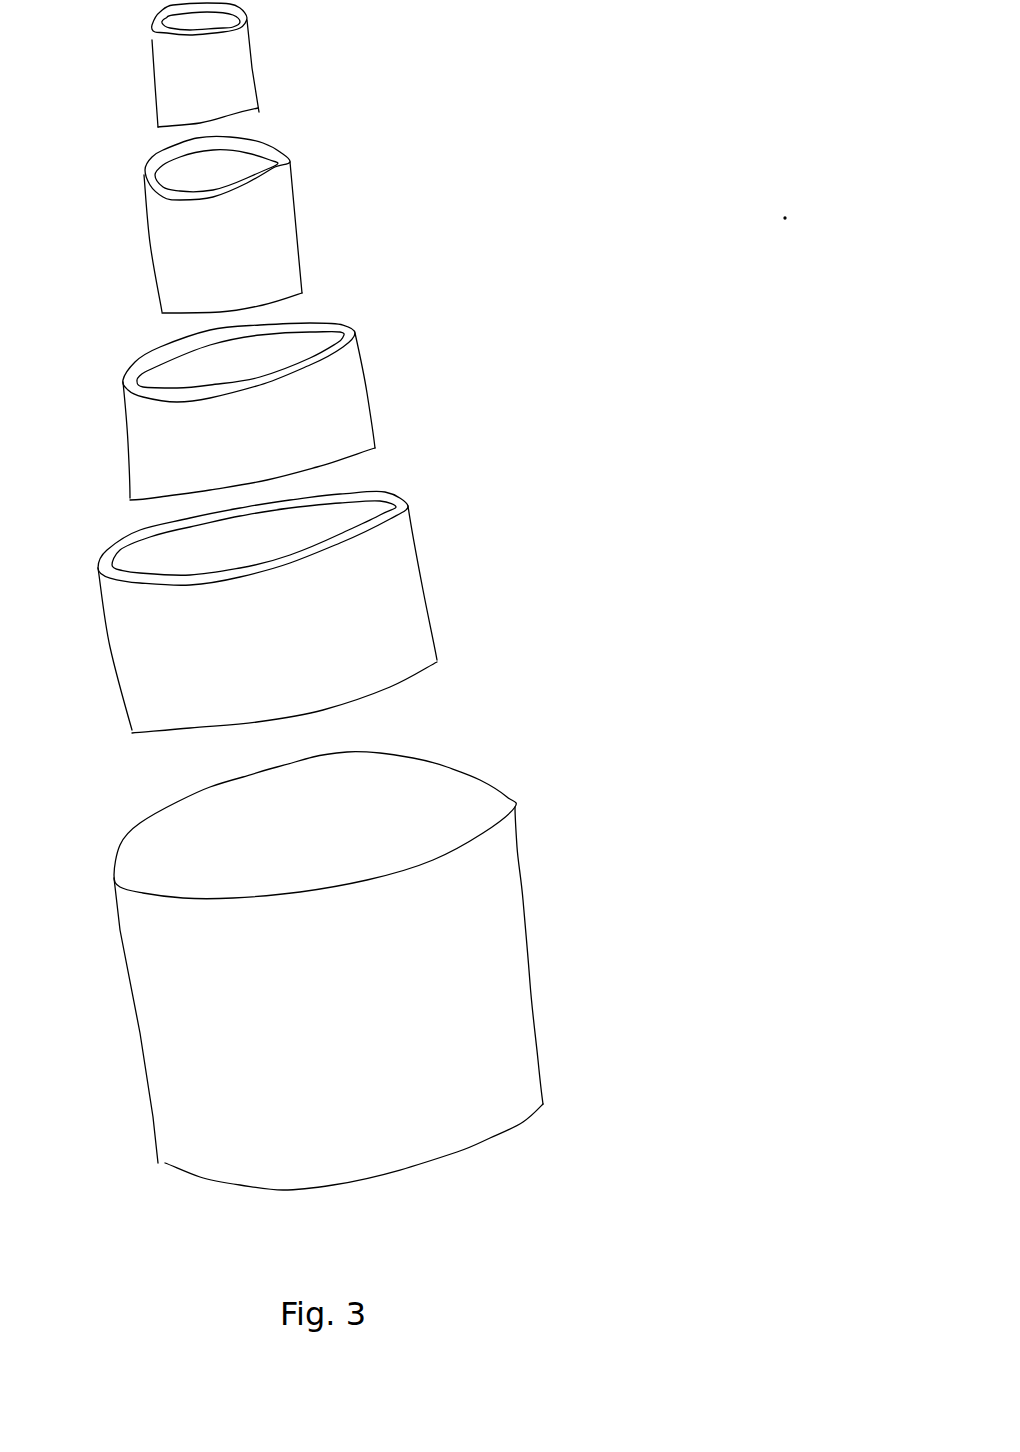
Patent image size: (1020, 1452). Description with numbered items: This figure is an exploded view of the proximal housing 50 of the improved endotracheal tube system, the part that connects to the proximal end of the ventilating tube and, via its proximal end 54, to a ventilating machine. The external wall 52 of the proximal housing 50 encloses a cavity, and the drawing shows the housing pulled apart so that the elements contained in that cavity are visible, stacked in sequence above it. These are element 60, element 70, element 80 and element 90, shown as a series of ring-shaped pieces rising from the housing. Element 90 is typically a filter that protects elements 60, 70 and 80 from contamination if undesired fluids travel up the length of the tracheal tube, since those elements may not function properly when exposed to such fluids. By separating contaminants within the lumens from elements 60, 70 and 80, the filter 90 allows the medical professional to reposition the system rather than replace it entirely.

The proximal housing 50 is at (442, 940).
The external wall 52 is at (381, 998).
The proximal end 54 is at (454, 795).
The element 60 is at (423, 555).
The element 70 is at (363, 373).
The element 80 is at (298, 198).
The filter 90 is at (255, 60).